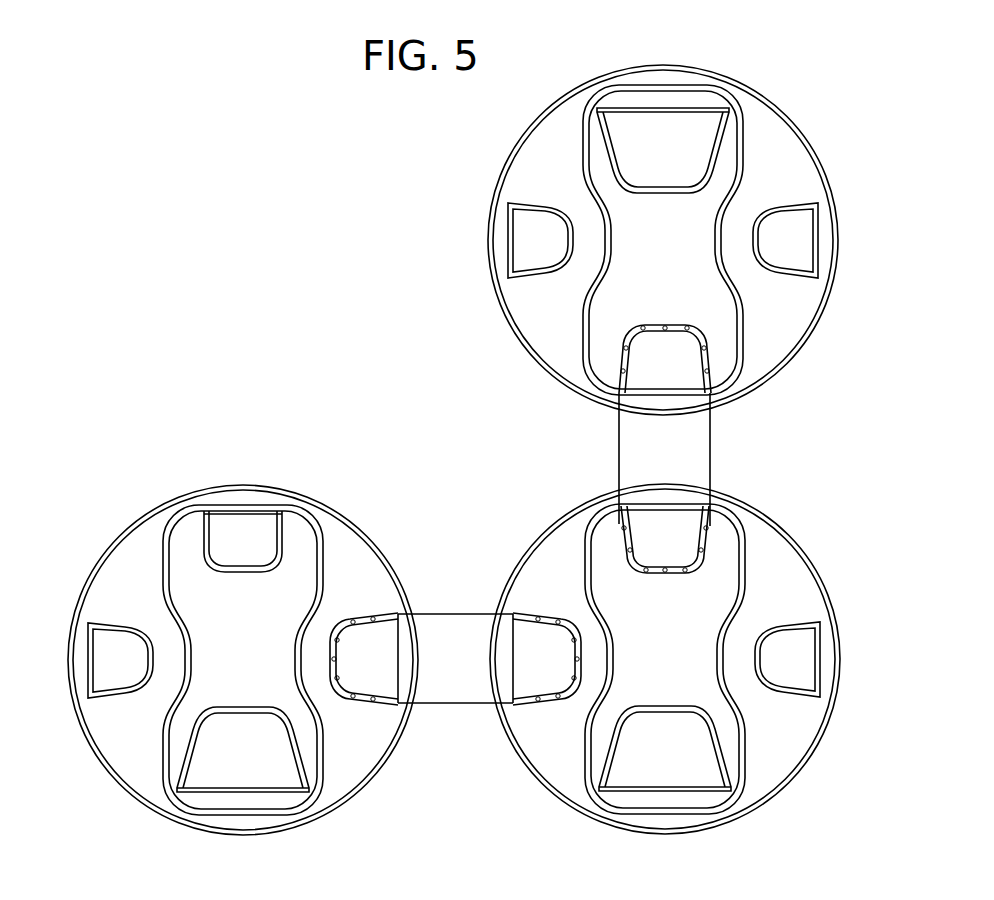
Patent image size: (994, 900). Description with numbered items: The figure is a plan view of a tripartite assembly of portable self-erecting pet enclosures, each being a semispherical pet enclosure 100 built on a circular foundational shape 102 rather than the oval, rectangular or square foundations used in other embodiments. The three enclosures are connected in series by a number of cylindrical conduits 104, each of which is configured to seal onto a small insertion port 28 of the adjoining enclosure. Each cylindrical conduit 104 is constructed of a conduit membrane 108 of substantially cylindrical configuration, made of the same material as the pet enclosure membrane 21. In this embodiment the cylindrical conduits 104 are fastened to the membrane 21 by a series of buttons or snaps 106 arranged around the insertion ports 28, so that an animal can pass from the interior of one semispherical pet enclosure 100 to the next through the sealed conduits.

The semispherical pet enclosure 100 is at (775, 70).
The circular foundational shape 102 is at (184, 500).
The membrane 21 is at (615, 323).
The small insertion port 28 is at (650, 373).
The cylindrical conduit 104 is at (712, 459).
The buttons or snaps 106 is at (700, 347).
The conduit membrane 108 is at (443, 696).